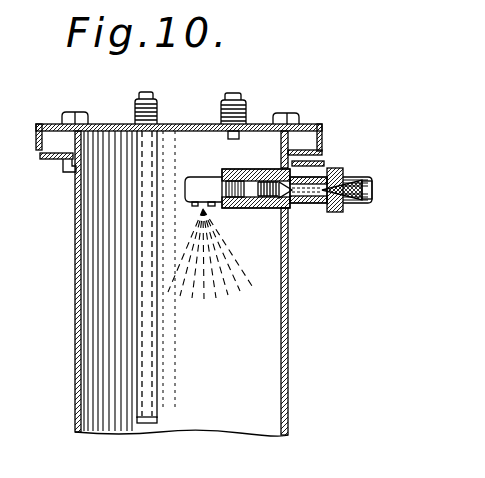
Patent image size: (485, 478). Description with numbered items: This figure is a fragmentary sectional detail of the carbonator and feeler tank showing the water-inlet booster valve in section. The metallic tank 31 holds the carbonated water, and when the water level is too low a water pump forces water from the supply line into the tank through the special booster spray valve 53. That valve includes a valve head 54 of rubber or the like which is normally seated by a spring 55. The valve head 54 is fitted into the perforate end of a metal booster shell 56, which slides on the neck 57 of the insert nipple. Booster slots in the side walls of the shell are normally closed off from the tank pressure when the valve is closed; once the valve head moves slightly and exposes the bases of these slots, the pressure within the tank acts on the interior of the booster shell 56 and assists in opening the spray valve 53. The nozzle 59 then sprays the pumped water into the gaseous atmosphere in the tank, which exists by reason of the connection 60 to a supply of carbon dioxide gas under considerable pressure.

The tank 31 is at (76, 285).
The booster spray valve 53 is at (309, 198).
The valve head 54 is at (282, 168).
The spring 55 is at (250, 207).
The booster shell 56 is at (300, 209).
The neck 57 is at (327, 209).
The nozzle 59 is at (185, 203).
The connection 60 is at (232, 88).